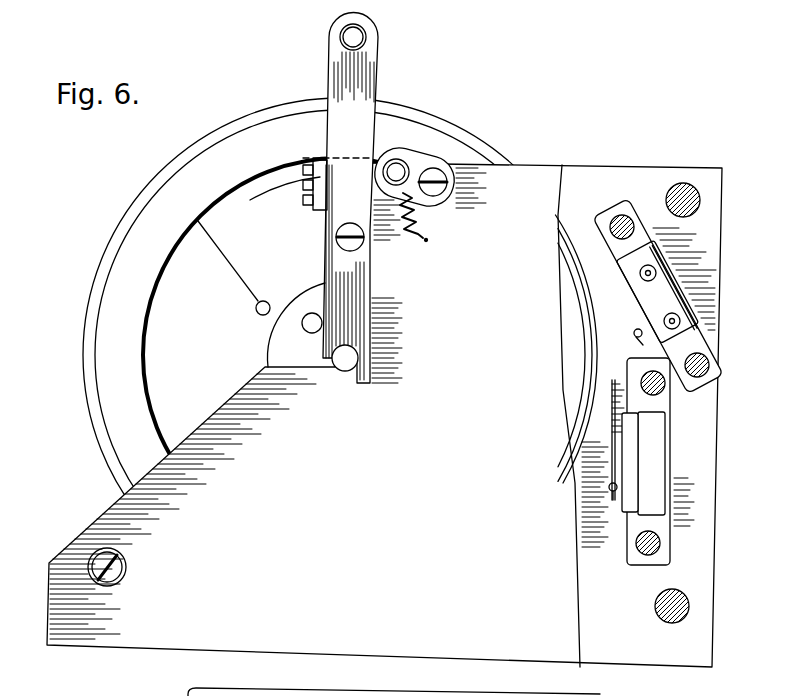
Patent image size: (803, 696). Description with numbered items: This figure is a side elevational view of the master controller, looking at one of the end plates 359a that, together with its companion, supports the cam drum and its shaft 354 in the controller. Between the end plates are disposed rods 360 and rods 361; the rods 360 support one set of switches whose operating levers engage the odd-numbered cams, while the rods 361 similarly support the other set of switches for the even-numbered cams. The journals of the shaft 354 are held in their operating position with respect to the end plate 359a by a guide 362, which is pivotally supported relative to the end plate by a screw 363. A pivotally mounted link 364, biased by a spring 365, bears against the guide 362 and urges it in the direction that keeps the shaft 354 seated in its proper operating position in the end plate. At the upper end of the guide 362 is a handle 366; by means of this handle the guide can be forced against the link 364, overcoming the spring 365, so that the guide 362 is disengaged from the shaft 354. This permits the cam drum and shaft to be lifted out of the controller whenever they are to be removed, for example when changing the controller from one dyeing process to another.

The shaft 354 is at (341, 369).
The end plate 359a is at (425, 518).
The rods 360 is at (660, 392).
The rods 361 is at (628, 220).
The guides 362 is at (362, 296).
The screws 363 is at (357, 246).
The links 364 is at (444, 159).
The springs 365 is at (426, 233).
The handle 366 is at (366, 31).